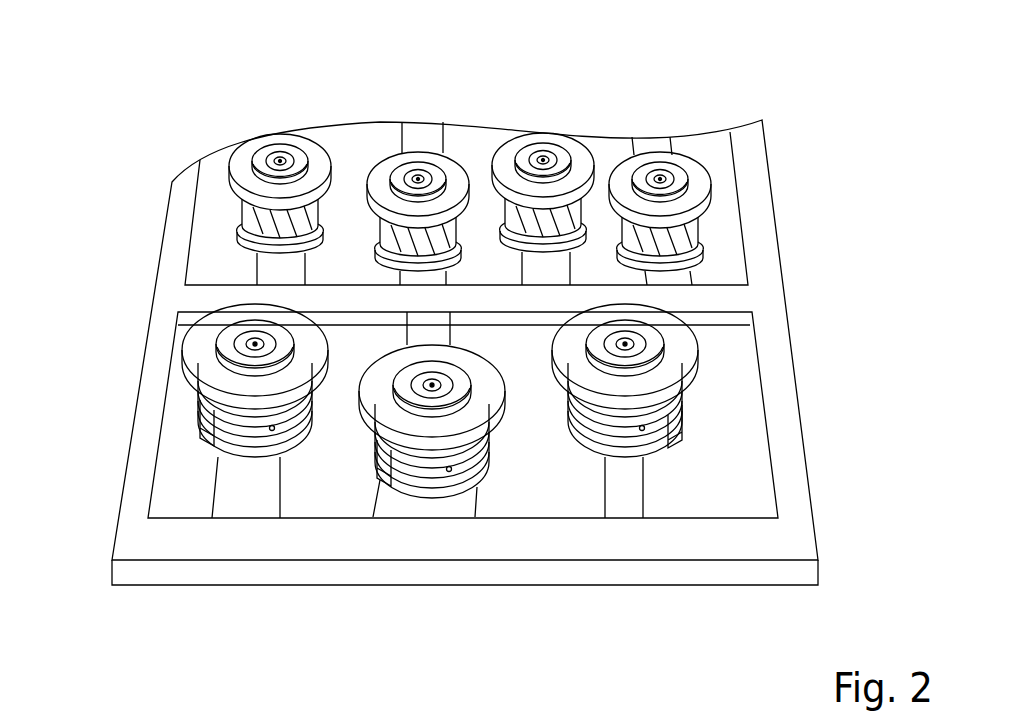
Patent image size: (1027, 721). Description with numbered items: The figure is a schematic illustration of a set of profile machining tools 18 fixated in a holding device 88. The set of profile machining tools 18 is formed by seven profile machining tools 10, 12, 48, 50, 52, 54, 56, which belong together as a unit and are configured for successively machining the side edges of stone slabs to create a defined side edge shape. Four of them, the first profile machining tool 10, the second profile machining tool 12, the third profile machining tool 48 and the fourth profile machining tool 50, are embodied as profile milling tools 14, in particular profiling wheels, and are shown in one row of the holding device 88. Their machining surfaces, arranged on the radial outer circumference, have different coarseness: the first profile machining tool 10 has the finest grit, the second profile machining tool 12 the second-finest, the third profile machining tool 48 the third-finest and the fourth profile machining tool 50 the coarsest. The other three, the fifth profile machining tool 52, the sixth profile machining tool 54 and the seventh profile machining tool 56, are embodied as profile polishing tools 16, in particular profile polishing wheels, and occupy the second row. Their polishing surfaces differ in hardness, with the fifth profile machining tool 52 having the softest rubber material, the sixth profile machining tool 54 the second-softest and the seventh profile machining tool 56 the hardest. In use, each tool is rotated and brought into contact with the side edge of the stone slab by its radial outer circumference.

The set of profile machining tools 18 is at (197, 110).
The holding device 88 is at (698, 542).
The profile milling tool 14 is at (501, 161).
The profile polishing tool 16 is at (478, 480).
The fourth profile machining tool 50 is at (240, 172).
The third profile machining tool 48 is at (420, 152).
The second profile machining tool 12 is at (575, 172).
The first profile machining tool 10 is at (683, 170).
The seventh profile machining tool 56 is at (247, 390).
The sixth profile machining tool 54 is at (408, 423).
The fifth profile machining tool 52 is at (677, 357).